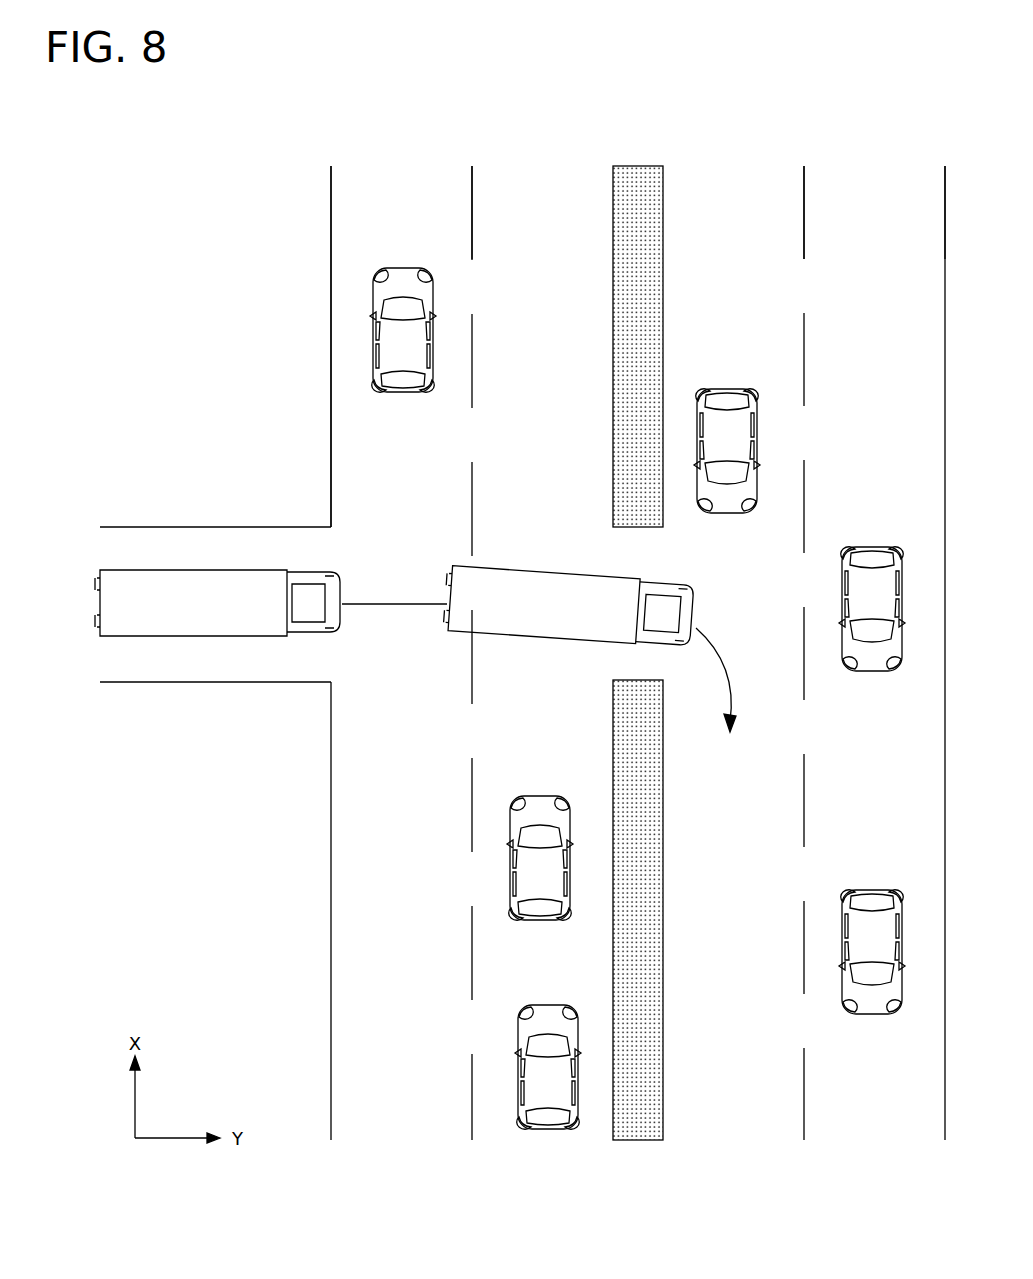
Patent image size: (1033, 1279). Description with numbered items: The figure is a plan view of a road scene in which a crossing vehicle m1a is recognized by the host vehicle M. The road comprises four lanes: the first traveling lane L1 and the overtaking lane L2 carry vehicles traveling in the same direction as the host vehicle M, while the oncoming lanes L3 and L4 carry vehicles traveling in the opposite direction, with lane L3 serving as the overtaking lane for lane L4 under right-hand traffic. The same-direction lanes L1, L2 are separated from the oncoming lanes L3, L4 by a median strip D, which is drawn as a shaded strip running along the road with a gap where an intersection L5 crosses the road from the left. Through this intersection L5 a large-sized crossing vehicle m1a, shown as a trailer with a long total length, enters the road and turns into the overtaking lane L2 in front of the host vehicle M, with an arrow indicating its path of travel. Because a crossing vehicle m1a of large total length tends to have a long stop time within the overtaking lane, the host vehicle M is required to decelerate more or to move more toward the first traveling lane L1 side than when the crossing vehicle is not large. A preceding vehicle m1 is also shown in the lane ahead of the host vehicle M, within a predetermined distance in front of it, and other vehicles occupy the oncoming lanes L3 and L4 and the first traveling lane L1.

The first traveling lane L1 is at (472, 160).
The overtaking lane L2 is at (613, 160).
The oncoming lane L3 is at (665, 160).
The oncoming lane L4 is at (807, 160).
The intersection L5 is at (90, 527).
The median strip D is at (636, 178).
The crossing vehicle m1a is at (543, 568).
The preceding vehicle m1 is at (538, 921).
The host vehicle M is at (548, 1130).